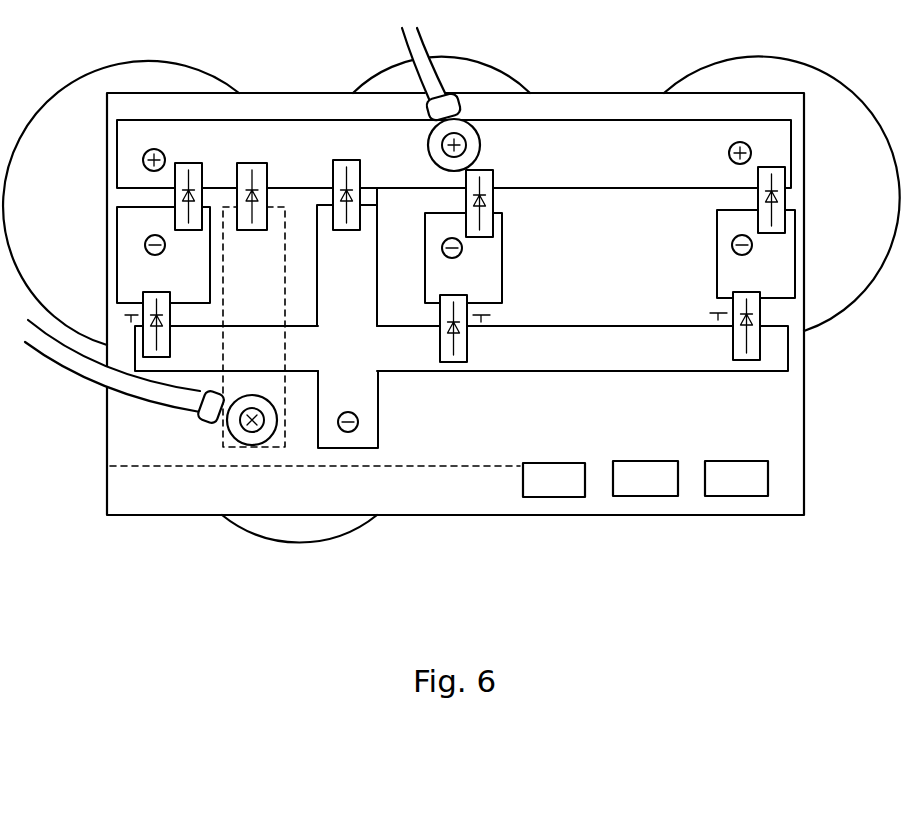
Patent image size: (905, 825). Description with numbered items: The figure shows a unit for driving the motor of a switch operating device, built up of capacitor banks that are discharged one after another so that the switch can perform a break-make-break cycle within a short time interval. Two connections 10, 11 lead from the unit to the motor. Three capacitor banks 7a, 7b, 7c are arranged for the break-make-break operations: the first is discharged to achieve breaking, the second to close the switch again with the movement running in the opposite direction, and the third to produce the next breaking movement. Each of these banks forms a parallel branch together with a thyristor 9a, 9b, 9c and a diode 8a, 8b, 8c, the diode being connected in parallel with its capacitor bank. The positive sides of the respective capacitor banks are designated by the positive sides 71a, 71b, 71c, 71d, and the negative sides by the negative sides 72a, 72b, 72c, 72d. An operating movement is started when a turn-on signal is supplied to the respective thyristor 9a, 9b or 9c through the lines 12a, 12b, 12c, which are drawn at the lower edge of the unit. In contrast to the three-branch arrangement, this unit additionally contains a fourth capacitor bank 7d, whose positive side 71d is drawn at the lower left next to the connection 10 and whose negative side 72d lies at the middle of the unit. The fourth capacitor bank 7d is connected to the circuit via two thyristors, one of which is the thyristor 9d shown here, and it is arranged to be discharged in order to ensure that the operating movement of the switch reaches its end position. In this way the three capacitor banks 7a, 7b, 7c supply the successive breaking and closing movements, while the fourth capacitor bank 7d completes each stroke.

The capacitor bank 7a is at (714, 72).
The capacitor bank 7b is at (477, 72).
The capacitor bank 7c is at (184, 69).
The fourth capacitor bank 7d is at (343, 523).
The diode 8a is at (765, 182).
The diode 8b is at (482, 182).
The diode 8c is at (194, 176).
The thyristor 9a is at (735, 308).
The thyristor 9b is at (468, 305).
The thyristor 9c is at (347, 173).
The thyristor 9d is at (258, 176).
The connection to the motor 10 is at (58, 360).
The connection to the motor 11 is at (425, 47).
The line 12a is at (556, 498).
The line 12b is at (645, 496).
The line 12c is at (737, 496).
The positive side of capacitor bank 71a is at (730, 148).
The positive side of capacitor bank 71b is at (460, 138).
The positive side of capacitor bank 71c is at (162, 153).
The positive side of capacitor bank 71d is at (253, 433).
The negative side of capacitor bank 72a is at (732, 243).
The negative side of capacitor bank 72b is at (462, 249).
The negative side of capacitor bank 72c is at (163, 253).
The negative side of capacitor bank 72d is at (358, 422).